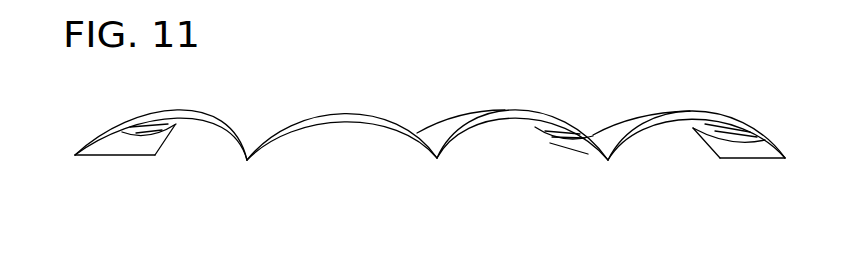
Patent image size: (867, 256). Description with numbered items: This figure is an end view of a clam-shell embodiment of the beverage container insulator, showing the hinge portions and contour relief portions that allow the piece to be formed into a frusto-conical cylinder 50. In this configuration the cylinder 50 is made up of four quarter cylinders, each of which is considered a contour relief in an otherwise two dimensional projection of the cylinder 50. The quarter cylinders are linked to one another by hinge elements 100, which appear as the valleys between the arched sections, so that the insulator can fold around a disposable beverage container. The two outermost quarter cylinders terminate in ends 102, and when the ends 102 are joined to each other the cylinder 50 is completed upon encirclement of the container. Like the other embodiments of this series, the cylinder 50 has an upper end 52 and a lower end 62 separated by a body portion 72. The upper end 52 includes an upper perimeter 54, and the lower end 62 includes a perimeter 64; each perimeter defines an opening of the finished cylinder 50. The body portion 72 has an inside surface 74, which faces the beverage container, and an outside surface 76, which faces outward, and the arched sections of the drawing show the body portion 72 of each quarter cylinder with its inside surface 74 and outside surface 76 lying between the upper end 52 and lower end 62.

The cylinder 50 is at (539, 82).
The upper end 52 is at (93, 157).
The upper perimeter 54 is at (100, 127).
The lower end 62 is at (178, 130).
The perimeter 64 is at (165, 145).
The body portion 72 is at (213, 123).
The inside surface 74 is at (132, 137).
The outside surface 76 is at (240, 133).
The hinge elements 100 is at (247, 160).
The ends 102 is at (120, 157).